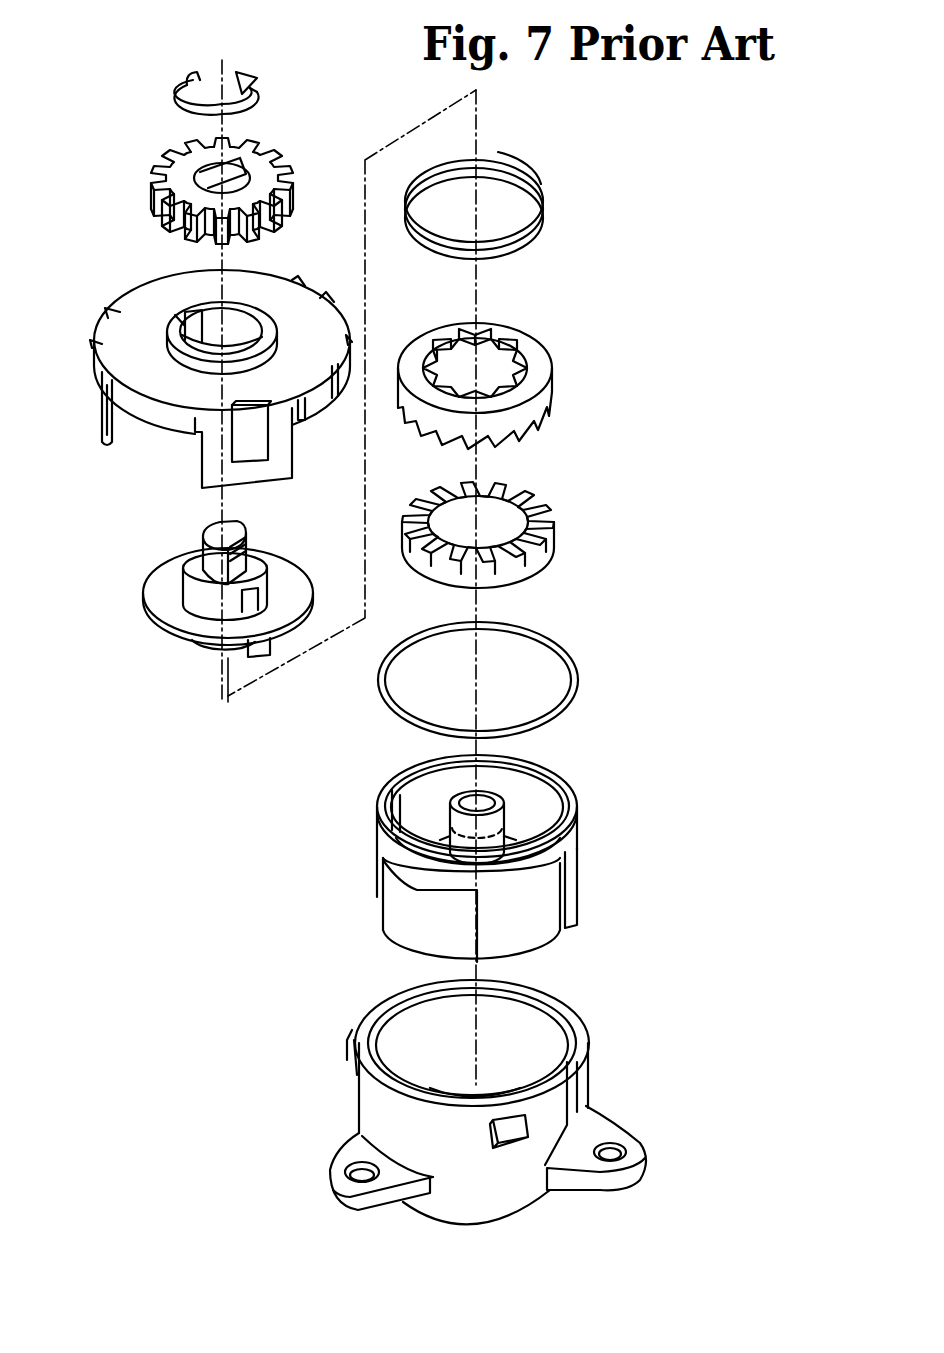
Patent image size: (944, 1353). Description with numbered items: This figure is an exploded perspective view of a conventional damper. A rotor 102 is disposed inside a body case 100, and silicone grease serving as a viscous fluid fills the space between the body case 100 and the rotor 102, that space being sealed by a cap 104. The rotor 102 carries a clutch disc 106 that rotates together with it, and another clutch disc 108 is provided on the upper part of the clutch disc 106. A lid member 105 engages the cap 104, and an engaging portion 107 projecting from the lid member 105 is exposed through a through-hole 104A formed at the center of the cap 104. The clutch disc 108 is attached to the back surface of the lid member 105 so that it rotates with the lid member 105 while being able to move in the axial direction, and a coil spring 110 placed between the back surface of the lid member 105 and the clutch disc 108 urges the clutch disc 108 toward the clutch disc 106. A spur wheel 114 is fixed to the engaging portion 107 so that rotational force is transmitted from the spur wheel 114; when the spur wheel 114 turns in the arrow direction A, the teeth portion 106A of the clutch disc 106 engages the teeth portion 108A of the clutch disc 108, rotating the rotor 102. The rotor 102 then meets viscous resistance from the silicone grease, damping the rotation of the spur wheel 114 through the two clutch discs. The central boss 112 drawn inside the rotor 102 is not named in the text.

The arrow direction A is at (262, 90).
The body case 100 is at (586, 1068).
The rotor 102 is at (580, 893).
The cap 104 is at (162, 395).
The through-hole 104A is at (175, 315).
The lid member 105 is at (173, 610).
The clutch disc 106 is at (548, 548).
The teeth portion 106A is at (548, 518).
The engaging portion 107 is at (193, 553).
The clutch disc 108 is at (548, 388).
The teeth portion 108A is at (552, 430).
The coil spring 110 is at (545, 208).
The central boss 112 is at (508, 822).
The spur wheel 114 is at (152, 178).